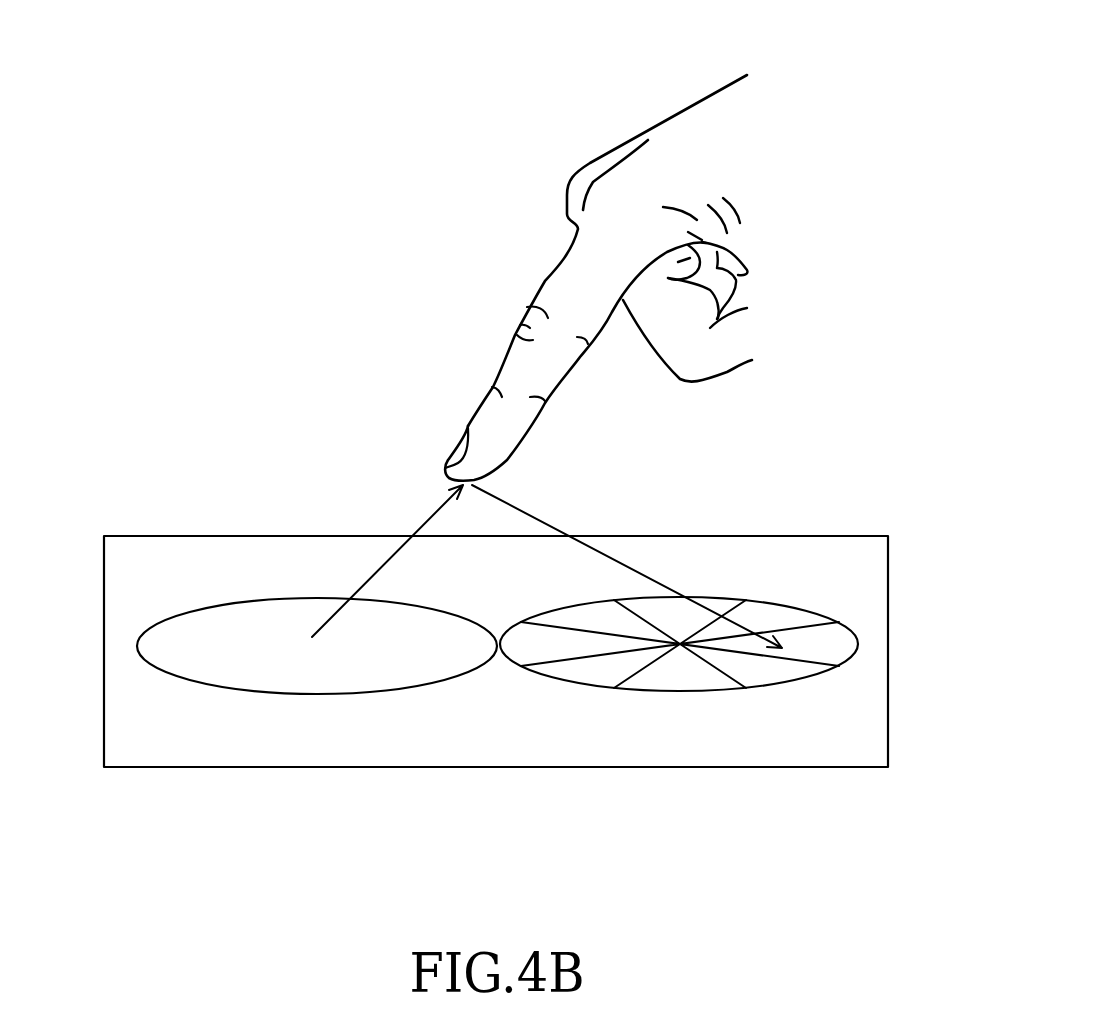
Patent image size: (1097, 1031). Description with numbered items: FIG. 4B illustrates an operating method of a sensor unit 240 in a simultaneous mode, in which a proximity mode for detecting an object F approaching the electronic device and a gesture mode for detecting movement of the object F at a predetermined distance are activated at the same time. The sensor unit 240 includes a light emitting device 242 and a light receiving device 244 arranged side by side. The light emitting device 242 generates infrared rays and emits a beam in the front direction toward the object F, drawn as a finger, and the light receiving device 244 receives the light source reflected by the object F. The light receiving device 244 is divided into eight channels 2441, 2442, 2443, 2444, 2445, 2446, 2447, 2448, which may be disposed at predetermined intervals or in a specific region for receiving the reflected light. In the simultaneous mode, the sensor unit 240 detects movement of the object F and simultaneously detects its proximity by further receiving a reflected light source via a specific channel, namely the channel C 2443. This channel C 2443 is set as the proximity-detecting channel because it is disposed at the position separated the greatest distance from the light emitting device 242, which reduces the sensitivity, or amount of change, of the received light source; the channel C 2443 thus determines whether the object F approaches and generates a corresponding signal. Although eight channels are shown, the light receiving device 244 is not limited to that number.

The object F is at (552, 298).
The sensor unit 240 is at (156, 498).
The light emitting device 242 is at (317, 679).
The light receiving device 244 is at (679, 679).
The channel 2441 is at (710, 605).
The channel 2442 is at (723, 680).
The channel C 2443 is at (842, 642).
The channel 2444 is at (523, 653).
The channel 2445 is at (567, 615).
The channel 2446 is at (787, 617).
The channel 2447 is at (578, 672).
The channel 2448 is at (795, 672).